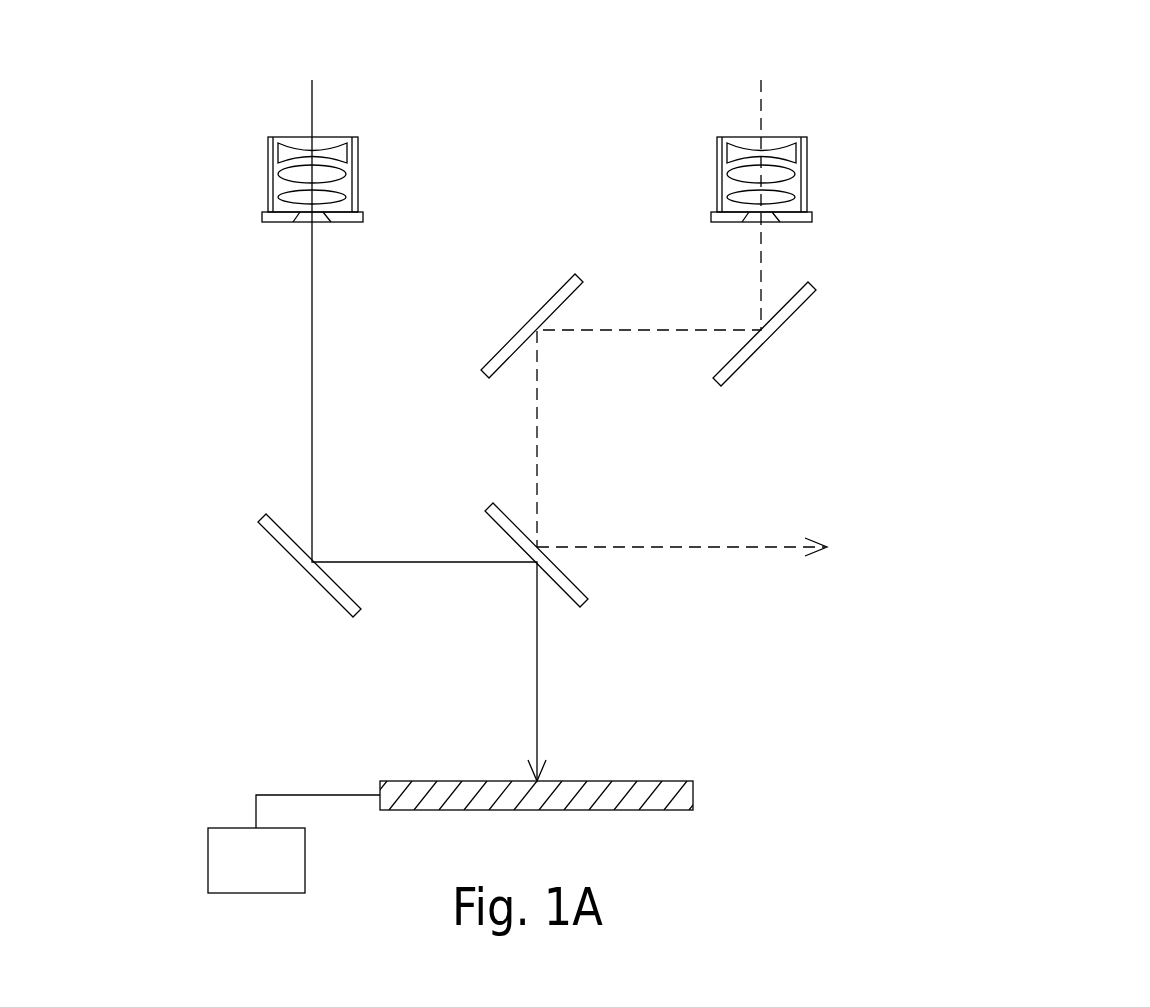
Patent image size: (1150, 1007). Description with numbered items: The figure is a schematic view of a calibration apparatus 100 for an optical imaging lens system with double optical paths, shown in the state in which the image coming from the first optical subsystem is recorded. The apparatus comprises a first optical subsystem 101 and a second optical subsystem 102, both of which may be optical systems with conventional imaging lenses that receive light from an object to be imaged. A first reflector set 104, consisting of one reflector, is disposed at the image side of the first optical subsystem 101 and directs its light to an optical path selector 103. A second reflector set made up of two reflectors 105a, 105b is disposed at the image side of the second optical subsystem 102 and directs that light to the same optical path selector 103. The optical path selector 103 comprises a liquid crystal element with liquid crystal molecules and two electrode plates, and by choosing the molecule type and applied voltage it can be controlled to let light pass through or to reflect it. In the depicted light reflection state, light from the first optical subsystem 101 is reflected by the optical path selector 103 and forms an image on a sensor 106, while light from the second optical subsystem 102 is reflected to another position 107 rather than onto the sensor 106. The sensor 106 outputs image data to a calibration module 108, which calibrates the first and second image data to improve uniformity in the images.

The calibration apparatus 100 is at (1013, 150).
The first optical subsystem 101 is at (358, 172).
The second optical subsystem 102 is at (807, 172).
The optical path selector 103 is at (585, 605).
The first reflector set 104 is at (303, 572).
The reflector 105a is at (816, 288).
The reflector 105b is at (584, 281).
The sensor 106 is at (695, 793).
The another position 107 is at (830, 547).
The calibration module 108 is at (294, 844).